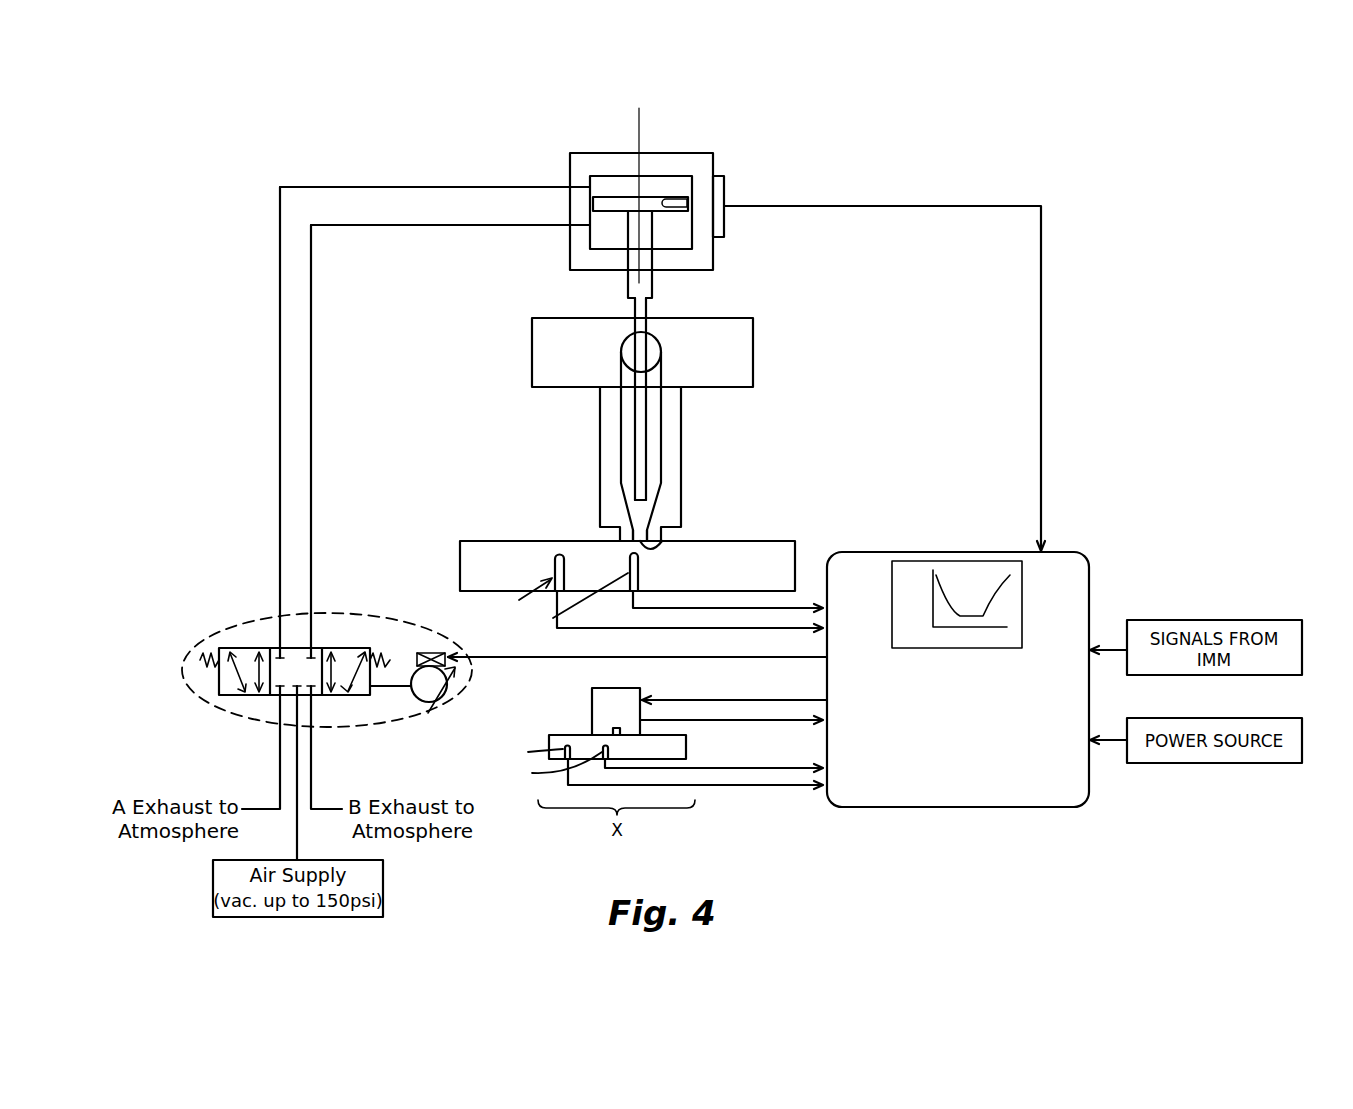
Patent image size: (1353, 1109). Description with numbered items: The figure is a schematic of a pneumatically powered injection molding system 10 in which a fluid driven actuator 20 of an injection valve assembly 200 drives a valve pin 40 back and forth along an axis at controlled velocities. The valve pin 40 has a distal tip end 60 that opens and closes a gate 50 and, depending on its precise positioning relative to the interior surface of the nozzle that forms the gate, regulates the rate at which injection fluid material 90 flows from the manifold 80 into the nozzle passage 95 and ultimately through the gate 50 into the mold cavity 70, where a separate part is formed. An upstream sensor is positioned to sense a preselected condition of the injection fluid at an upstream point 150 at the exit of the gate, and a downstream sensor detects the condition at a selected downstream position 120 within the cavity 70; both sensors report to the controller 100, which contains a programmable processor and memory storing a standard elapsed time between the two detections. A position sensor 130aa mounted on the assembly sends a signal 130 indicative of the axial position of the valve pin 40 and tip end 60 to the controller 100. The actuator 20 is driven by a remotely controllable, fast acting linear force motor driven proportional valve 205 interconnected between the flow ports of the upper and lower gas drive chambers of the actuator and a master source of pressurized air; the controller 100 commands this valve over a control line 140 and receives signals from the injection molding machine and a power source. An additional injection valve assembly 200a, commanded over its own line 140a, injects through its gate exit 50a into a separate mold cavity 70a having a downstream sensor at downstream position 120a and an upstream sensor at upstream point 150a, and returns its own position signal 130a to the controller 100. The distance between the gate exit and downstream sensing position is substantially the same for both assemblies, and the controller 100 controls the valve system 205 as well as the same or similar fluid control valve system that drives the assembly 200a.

The system 10 is at (511, 133).
The actuator 20 is at (570, 170).
The injection valve assembly 200 is at (695, 150).
The signal 130 is at (847, 205).
The position sensor 130aa is at (724, 218).
The manifold 80 is at (756, 352).
The nozzle passage 95 is at (621, 420).
The injection fluid material 90 is at (655, 422).
The valve pin 40 is at (645, 442).
The distal tip end 60 is at (648, 503).
The gate 50 is at (672, 541).
The mold cavity 70 is at (778, 545).
The downstream sensing position 120 is at (556, 554).
The upstream point 150 is at (625, 549).
The controller 100 is at (1091, 570).
The proportional valve 205 is at (219, 622).
The valve control line 140 is at (726, 657).
The second actuator control line 140a is at (734, 696).
The additional injection valve assembly 200a is at (590, 692).
The exit 50a is at (613, 728).
The downstream position 120a is at (566, 745).
The signal 130a is at (777, 721).
The mold cavity 70a is at (686, 750).
The upstream point 150a is at (610, 740).